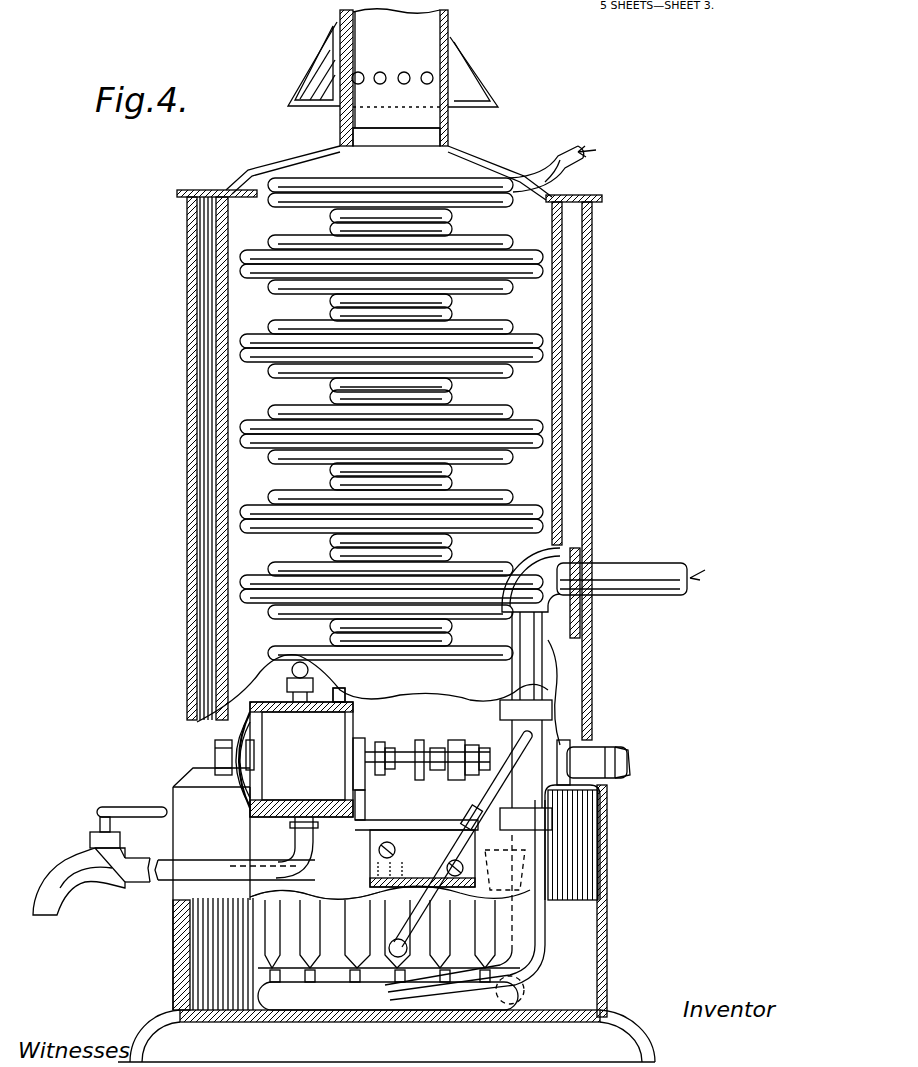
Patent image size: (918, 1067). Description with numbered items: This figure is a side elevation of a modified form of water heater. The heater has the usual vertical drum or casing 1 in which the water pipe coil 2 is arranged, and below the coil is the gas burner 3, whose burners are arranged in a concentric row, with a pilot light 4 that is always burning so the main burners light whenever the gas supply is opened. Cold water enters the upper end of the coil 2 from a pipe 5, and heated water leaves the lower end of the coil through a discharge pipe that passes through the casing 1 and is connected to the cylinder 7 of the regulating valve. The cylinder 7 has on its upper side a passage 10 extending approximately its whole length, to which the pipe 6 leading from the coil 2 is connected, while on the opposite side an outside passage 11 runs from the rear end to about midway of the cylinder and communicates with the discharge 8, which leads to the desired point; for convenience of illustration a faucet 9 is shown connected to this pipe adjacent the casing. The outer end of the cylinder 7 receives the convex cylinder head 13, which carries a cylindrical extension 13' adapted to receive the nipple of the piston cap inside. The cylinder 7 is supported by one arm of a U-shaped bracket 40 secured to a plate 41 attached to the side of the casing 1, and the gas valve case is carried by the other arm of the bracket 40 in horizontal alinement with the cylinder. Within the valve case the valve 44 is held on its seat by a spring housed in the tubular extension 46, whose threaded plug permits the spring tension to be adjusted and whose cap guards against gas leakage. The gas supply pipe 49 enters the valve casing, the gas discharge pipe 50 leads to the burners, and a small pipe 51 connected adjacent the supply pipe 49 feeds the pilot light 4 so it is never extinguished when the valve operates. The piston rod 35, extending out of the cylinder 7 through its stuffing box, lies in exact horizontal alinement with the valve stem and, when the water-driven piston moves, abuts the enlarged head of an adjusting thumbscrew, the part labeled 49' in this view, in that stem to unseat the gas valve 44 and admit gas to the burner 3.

The casing 1 is at (592, 381).
The water pipe coil 2 is at (540, 343).
The gas burner 3 is at (192, 968).
The pilot light 4 is at (356, 890).
The cold water supply pipe 5 is at (556, 162).
The pipe 6 is at (187, 633).
The cylinder 7 is at (294, 752).
The discharge pipe 8 is at (172, 878).
The faucet 9 is at (100, 886).
The passage 10 is at (352, 702).
The passage 11 is at (326, 830).
The cylinder head 13 is at (202, 757).
The cylindrical extension 13' is at (192, 756).
The piston rod 35 is at (395, 756).
The U-shaped bracket 40 is at (375, 810).
The plate 41 is at (397, 850).
The valve 44 is at (605, 806).
The tubular extension 46 is at (592, 760).
The gas supply pipe 49 is at (589, 689).
The gas cock 49' is at (654, 762).
The gas discharge pipe 50 is at (545, 880).
The small pipe 51 is at (500, 762).